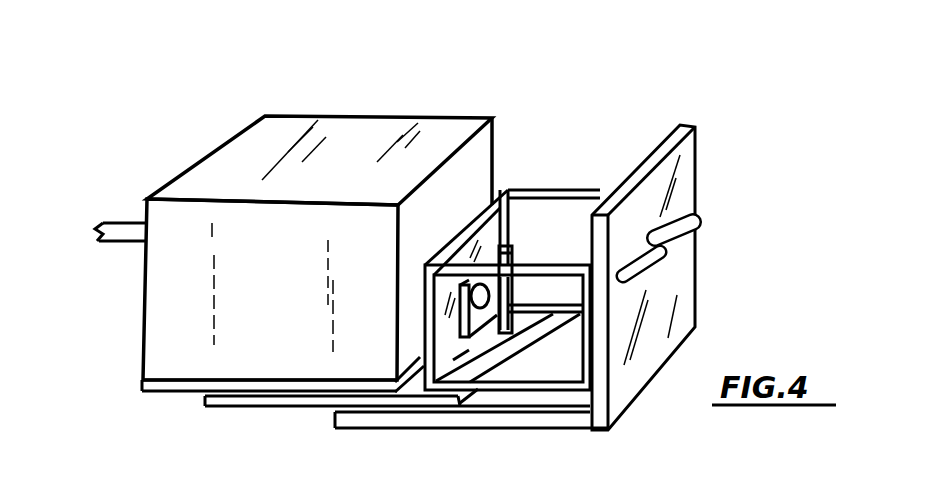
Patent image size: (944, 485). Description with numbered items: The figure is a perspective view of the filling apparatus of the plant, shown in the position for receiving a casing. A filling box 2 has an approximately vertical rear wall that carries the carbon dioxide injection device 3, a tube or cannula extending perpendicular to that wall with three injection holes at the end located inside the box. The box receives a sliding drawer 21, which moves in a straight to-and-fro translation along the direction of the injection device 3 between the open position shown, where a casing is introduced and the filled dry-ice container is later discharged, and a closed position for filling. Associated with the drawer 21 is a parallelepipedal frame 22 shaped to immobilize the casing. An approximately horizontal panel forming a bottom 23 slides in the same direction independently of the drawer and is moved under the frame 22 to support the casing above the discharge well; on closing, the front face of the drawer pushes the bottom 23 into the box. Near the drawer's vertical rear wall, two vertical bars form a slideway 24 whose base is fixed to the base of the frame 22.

The filling box 2 is at (367, 100).
The carbon dioxide injection device 3 is at (103, 203).
The sliding drawer 21 is at (592, 247).
The frame 22 is at (528, 190).
The bottom panel 23 is at (282, 400).
The slideway bars 24 is at (505, 262).